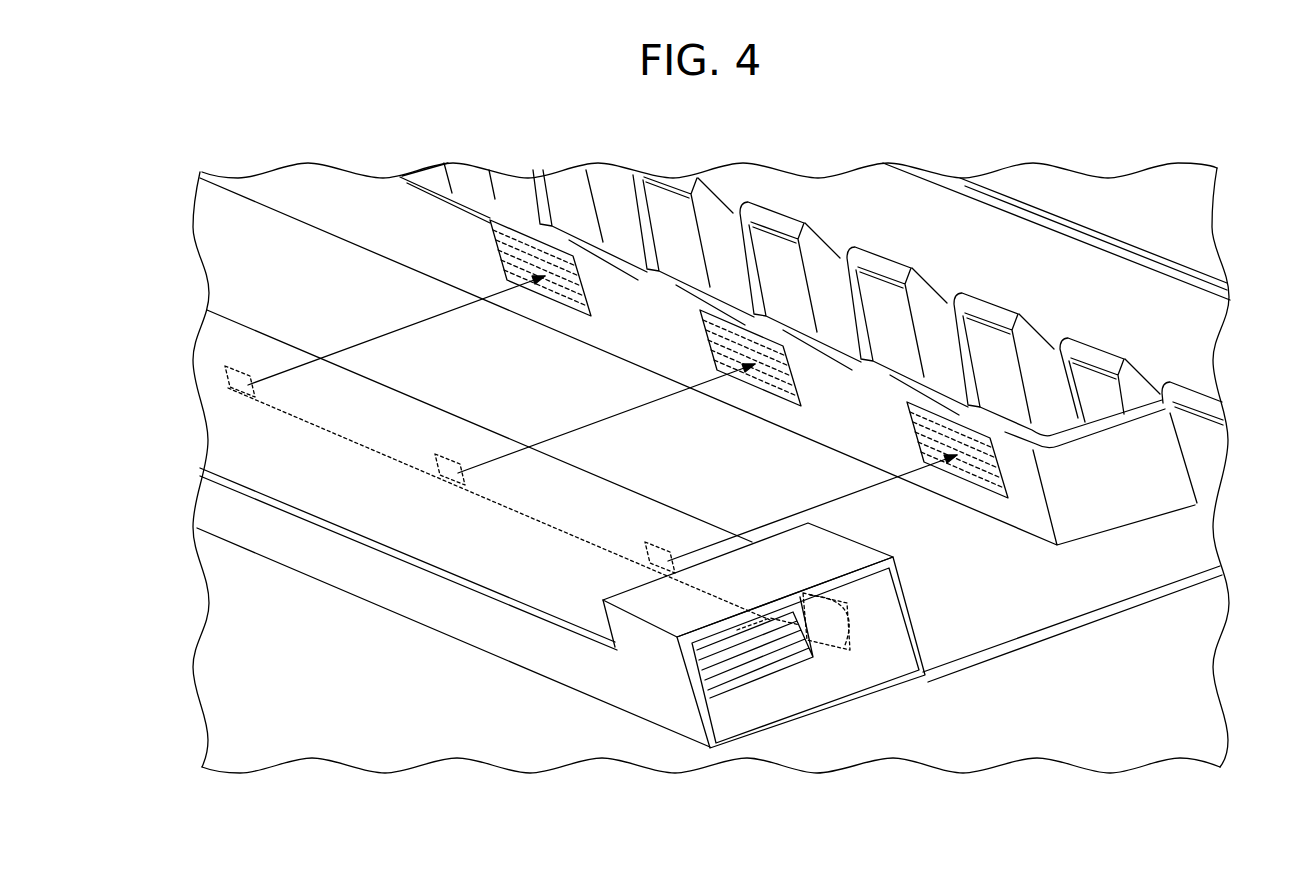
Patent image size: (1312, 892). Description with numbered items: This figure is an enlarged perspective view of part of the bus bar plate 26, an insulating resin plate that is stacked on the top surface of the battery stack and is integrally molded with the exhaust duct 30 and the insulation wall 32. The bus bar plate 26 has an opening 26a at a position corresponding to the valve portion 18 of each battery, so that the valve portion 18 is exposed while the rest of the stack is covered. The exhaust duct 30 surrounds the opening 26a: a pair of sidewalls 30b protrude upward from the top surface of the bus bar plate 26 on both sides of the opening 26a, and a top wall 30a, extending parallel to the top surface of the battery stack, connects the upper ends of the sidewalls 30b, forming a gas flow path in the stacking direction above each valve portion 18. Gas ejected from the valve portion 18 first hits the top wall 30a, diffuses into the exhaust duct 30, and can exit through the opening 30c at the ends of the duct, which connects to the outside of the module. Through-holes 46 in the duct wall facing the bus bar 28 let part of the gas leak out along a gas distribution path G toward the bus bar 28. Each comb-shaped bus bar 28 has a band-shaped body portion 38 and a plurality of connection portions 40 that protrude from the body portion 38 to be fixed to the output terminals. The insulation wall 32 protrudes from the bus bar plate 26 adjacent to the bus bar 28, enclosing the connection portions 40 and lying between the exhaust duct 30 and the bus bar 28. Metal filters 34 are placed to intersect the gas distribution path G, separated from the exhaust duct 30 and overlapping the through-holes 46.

The valve portion 18 is at (791, 612).
The bus bar plate 26 is at (1087, 593).
The opening 26a is at (803, 601).
The bus bar 28 is at (1033, 226).
The exhaust duct 30 is at (668, 682).
The top wall 30a is at (508, 573).
The sidewall 30b is at (243, 313).
The opening 30c is at (720, 720).
The insulation wall 32 is at (1020, 498).
The metal filter 34 is at (516, 228).
The body portion 38 is at (1098, 277).
The connection portion 40 is at (1045, 387).
The through-hole 46 is at (208, 390).
The gas distribution path G is at (390, 330).